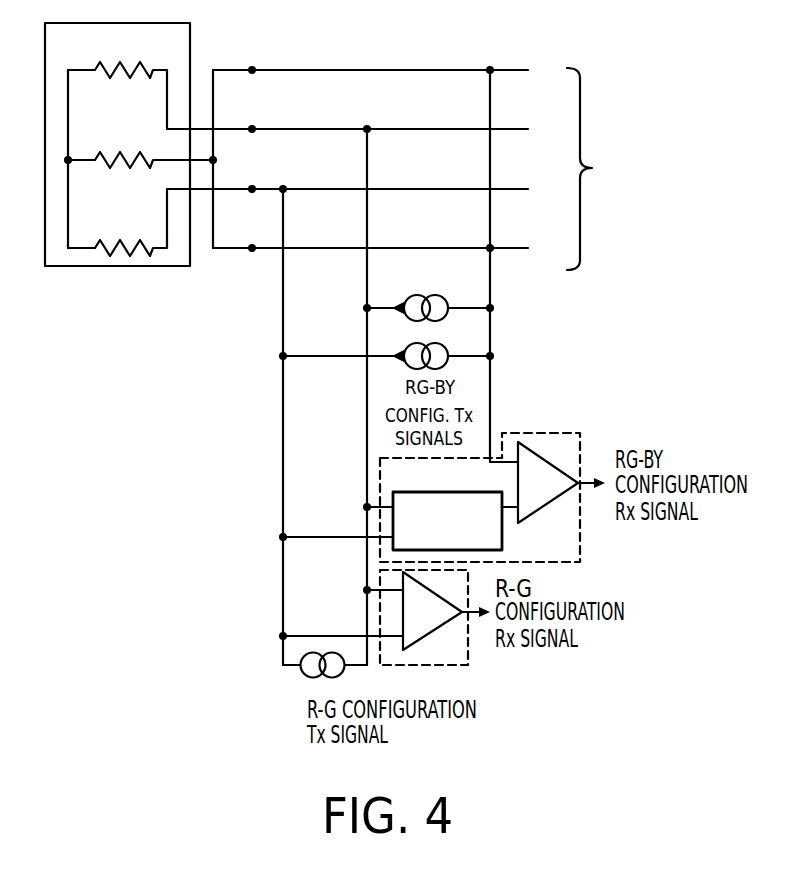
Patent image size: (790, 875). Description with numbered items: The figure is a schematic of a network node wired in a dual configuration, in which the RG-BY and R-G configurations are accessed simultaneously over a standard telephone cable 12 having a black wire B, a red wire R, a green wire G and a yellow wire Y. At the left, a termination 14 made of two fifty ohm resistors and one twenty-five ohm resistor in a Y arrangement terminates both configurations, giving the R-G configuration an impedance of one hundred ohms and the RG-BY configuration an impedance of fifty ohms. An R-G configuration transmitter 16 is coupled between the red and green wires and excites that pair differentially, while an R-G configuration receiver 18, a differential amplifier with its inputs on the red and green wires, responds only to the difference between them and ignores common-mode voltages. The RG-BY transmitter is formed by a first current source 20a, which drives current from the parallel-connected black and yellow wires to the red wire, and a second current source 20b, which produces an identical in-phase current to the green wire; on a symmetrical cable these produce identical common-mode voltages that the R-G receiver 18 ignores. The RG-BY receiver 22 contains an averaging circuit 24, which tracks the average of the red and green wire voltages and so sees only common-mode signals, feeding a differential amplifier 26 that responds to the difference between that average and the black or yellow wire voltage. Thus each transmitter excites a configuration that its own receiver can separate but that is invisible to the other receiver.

The telephone cable 12 is at (420, 166).
The termination 14 is at (122, 267).
The R-G configuration transmitter 16 is at (305, 678).
The R-G configuration receiver 18 is at (470, 665).
The first current source 20a is at (434, 295).
The second current source 20b is at (434, 343).
The RG-BY receiver 22 is at (450, 478).
The averaging circuit 24 is at (420, 492).
The differential amplifier 26 is at (538, 510).